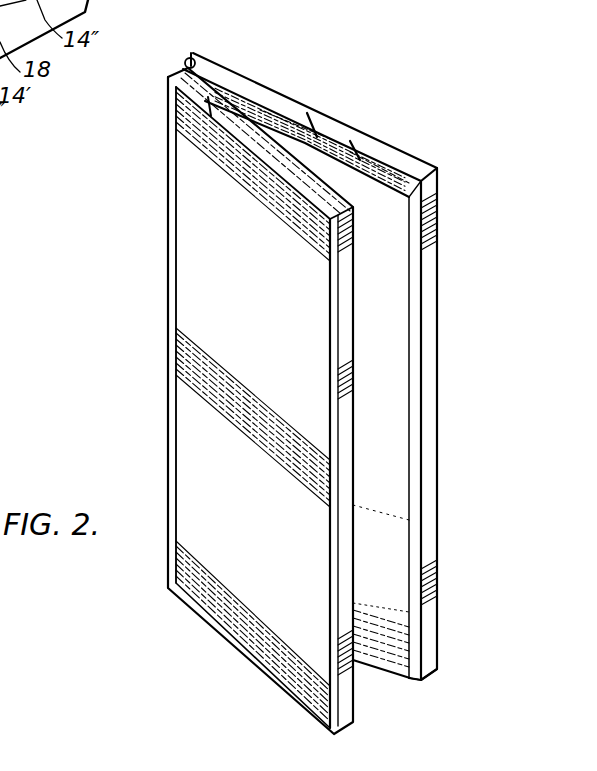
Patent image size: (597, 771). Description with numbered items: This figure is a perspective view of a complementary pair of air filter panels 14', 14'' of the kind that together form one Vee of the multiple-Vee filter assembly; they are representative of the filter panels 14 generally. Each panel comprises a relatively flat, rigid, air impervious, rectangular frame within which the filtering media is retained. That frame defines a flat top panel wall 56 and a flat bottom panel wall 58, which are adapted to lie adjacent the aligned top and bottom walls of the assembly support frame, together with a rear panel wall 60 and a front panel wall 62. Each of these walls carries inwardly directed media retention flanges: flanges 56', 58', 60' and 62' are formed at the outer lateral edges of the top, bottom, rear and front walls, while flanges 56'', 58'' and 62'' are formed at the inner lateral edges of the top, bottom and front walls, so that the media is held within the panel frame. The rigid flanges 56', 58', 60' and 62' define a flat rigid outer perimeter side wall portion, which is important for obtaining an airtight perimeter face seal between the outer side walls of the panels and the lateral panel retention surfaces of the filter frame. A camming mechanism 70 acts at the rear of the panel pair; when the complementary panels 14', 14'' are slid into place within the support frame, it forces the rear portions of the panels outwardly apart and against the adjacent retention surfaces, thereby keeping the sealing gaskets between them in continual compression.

The filter panel 14' is at (223, 401).
The filter panels 14 is at (310, 365).
The filter panel 14'' is at (417, 424).
The media retention flange 56' is at (263, 153).
The top panel wall 56 is at (308, 108).
The media retention flange 56'' is at (389, 140).
The media retention flange 58' is at (253, 631).
The bottom panel wall 58 is at (373, 681).
The media retention flange 58'' is at (447, 688).
The rear panel wall 60 is at (190, 52).
The media retention flange 60' is at (142, 332).
The front panel wall 62 is at (385, 506).
The media retention flange 62' is at (310, 417).
The media retention flange 62'' is at (370, 396).
The camming mechanism 70 is at (193, 58).